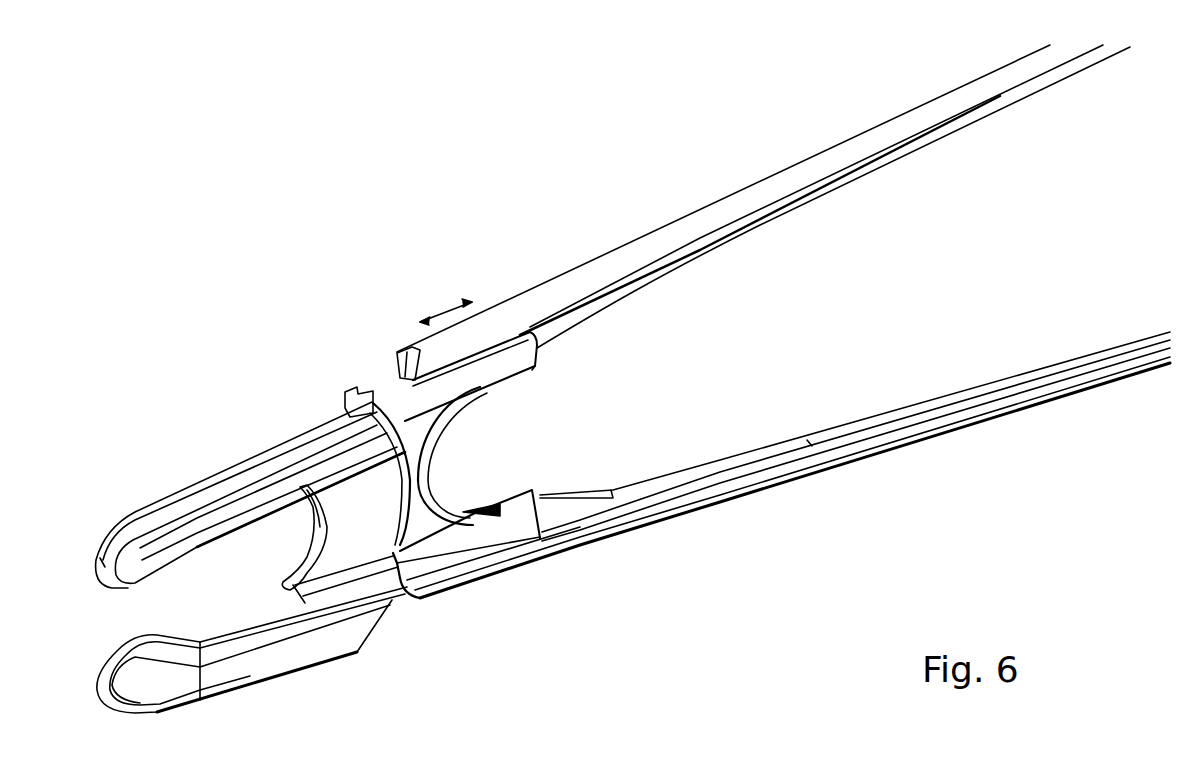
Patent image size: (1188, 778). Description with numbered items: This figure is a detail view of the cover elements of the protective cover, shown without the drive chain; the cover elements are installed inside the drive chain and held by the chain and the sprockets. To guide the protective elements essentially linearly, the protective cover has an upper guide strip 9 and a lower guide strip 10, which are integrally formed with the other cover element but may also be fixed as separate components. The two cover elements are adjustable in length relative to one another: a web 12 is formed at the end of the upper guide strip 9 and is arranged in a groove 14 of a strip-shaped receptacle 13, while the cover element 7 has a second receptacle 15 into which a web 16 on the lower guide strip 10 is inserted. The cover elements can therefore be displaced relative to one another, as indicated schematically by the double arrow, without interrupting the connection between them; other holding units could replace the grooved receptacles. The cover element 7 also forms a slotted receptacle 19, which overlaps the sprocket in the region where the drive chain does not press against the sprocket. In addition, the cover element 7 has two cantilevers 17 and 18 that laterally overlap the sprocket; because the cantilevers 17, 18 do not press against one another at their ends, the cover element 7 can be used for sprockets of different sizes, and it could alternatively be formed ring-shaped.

The cover element 7 is at (318, 473).
The upper guide strip 9 is at (868, 147).
The lower guide strip 10 is at (870, 437).
The web 12 is at (553, 328).
The strip-shaped receptacle 13 is at (477, 377).
The groove 14 is at (387, 390).
The second receptacle 15 is at (450, 550).
The web 16 is at (567, 518).
The cantilever 17 is at (272, 658).
The cantilever 18 is at (223, 498).
The slotted receptacle 19 is at (303, 554).